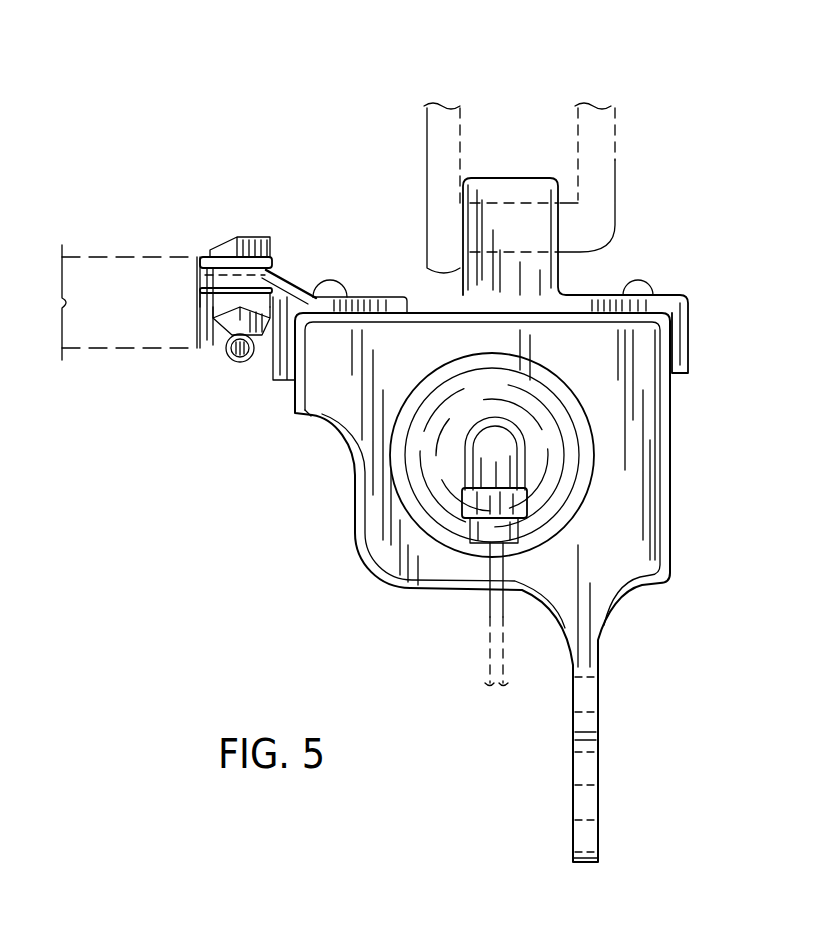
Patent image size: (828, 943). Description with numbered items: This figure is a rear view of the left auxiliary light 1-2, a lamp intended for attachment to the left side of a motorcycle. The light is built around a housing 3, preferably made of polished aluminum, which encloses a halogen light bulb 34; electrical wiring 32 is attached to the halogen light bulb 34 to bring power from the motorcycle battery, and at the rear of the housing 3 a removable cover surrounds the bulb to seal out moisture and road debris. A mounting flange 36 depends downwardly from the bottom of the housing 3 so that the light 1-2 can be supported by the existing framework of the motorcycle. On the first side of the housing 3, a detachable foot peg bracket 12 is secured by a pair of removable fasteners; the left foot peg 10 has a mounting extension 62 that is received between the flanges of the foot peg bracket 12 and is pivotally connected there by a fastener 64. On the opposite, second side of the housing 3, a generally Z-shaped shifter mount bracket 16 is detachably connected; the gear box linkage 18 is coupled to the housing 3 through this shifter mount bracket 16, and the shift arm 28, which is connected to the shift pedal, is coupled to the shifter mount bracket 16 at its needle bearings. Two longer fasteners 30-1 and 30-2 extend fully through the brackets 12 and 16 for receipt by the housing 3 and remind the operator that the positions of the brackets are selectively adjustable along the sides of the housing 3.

The left auxiliary light 1-2 is at (706, 386).
The housing 3 is at (338, 472).
The left foot peg 10 is at (100, 256).
The foot peg bracket 12 is at (287, 381).
The shifter mount bracket 16 is at (558, 285).
The gear box linkage 18 is at (427, 160).
The shift arm 28 is at (617, 216).
The longer fastener 30-1 is at (652, 289).
The longer fastener 30-2 is at (325, 288).
The electrical wiring 32 is at (487, 663).
The halogen light bulb 34 is at (497, 465).
The mounting flange 36 is at (589, 762).
The mounting extension 62 is at (278, 270).
The fastener 64 is at (237, 363).